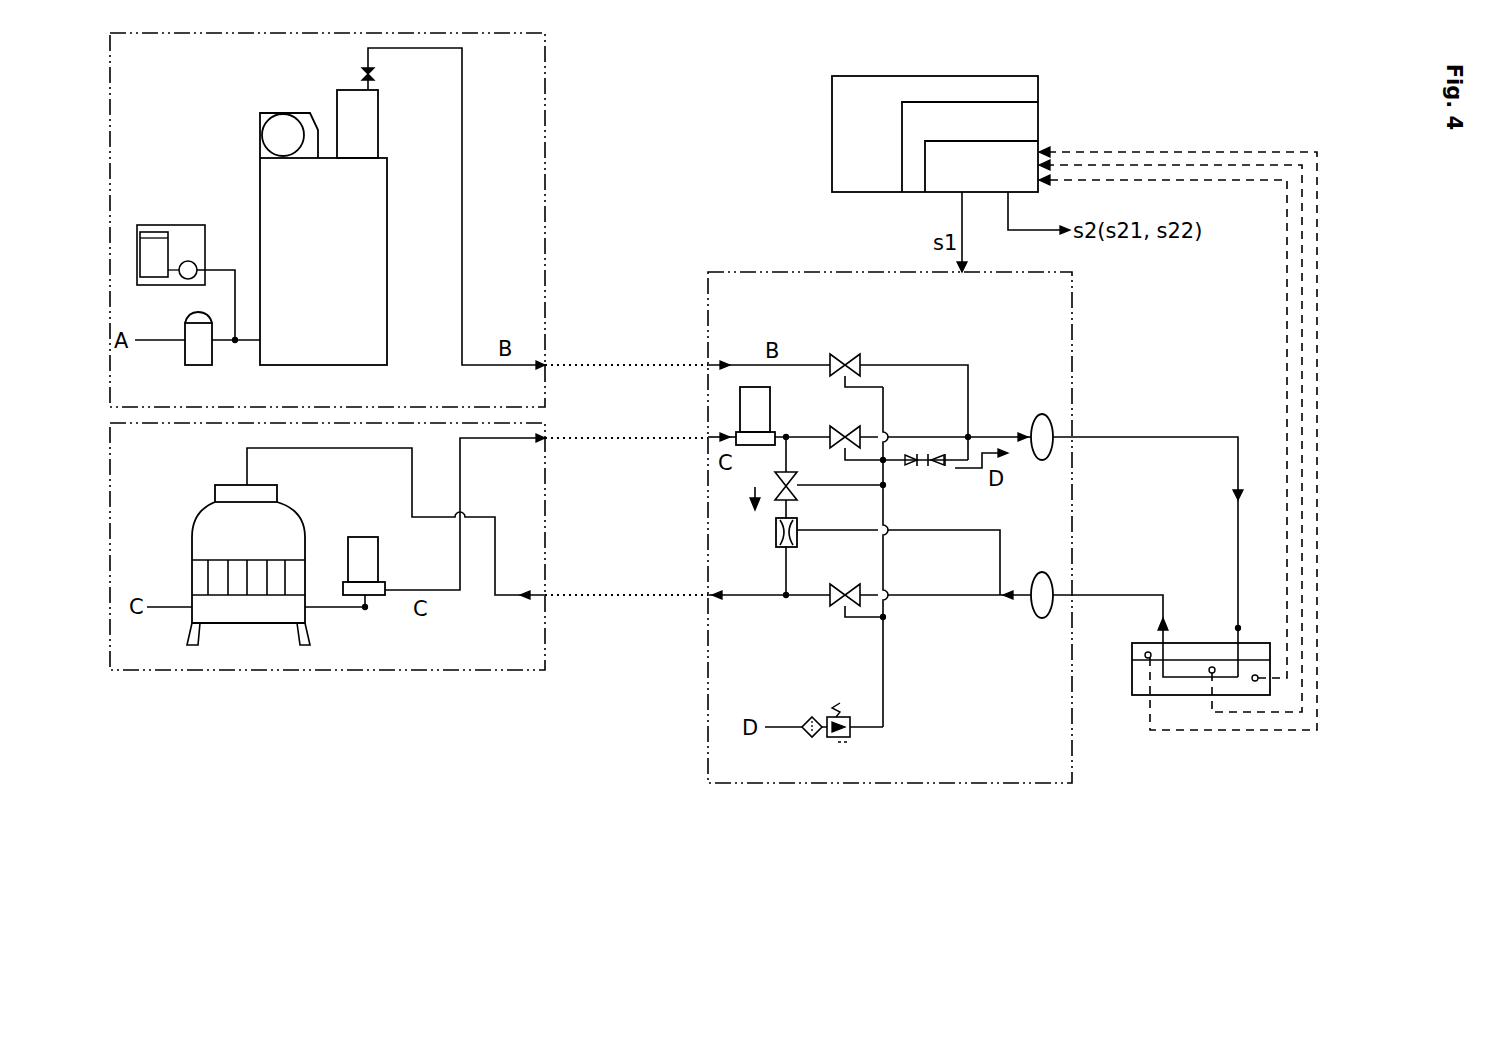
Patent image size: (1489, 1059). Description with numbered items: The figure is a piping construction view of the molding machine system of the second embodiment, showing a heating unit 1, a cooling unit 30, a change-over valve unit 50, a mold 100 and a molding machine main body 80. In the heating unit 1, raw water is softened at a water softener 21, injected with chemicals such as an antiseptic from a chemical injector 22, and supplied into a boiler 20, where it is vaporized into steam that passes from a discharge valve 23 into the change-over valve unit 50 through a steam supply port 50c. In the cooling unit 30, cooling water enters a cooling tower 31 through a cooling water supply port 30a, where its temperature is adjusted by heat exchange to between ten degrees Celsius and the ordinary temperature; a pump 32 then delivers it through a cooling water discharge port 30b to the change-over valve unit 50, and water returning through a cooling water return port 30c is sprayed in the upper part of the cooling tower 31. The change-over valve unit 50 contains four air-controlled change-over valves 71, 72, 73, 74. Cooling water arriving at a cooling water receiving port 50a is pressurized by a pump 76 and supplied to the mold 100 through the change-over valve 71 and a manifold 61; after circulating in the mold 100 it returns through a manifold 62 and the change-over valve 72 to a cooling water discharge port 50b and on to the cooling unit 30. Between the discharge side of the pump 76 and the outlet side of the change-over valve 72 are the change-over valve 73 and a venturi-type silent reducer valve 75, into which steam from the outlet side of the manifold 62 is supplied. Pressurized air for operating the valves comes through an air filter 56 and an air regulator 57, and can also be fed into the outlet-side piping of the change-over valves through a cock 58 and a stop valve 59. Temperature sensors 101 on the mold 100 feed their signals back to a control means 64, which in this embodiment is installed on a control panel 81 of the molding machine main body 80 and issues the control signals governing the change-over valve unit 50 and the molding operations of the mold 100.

The heating unit 1 is at (545, 90).
The boiler 20 is at (387, 228).
The water softener 21 is at (212, 355).
The chemical injector 22 is at (137, 240).
The discharge valve 23 is at (375, 72).
The cooling unit 30 is at (545, 640).
The cooling water supply port 30a is at (165, 607).
The cooling water discharge port 30b is at (545, 438).
The cooling water return port 30c is at (545, 595).
The cooling tower 31 is at (227, 485).
The pump 32 is at (378, 565).
The change-over valve unit 50 is at (1072, 290).
The cooling water receiving port 50a is at (708, 438).
The cooling water discharge port 50b is at (708, 595).
The steam supply port 50c is at (708, 365).
The air filter 56 is at (812, 737).
The air regulator 57 is at (836, 740).
The cock 58 is at (910, 466).
The stop valve 59 is at (938, 466).
The manifold 61 is at (1042, 414).
The manifold 62 is at (1042, 572).
The control means 64 is at (935, 192).
The change-over valve 71 is at (843, 426).
The change-over valve 72 is at (845, 584).
The change-over valve 73 is at (797, 480).
The change-over valve 74 is at (842, 354).
The valve (silent reducer) 75 is at (797, 525).
The pump 76 is at (770, 410).
The molding machine main body 80 is at (832, 140).
The control panel 81 is at (1038, 125).
The mold 100 is at (1130, 688).
The temperature sensors 101 is at (1146, 653).